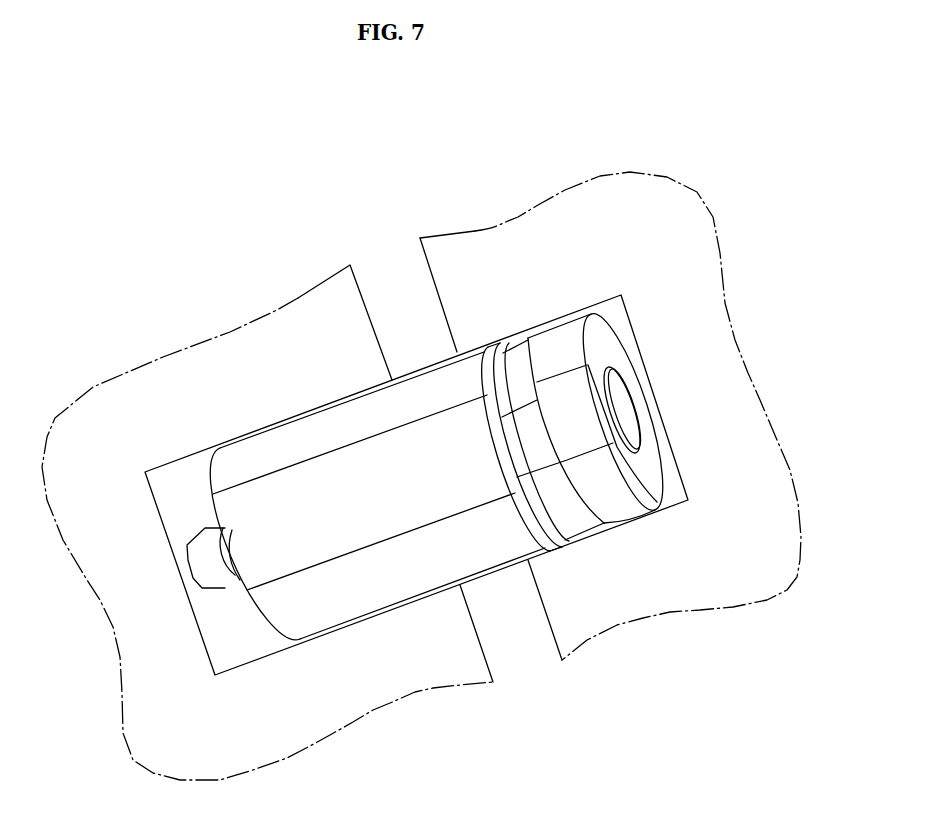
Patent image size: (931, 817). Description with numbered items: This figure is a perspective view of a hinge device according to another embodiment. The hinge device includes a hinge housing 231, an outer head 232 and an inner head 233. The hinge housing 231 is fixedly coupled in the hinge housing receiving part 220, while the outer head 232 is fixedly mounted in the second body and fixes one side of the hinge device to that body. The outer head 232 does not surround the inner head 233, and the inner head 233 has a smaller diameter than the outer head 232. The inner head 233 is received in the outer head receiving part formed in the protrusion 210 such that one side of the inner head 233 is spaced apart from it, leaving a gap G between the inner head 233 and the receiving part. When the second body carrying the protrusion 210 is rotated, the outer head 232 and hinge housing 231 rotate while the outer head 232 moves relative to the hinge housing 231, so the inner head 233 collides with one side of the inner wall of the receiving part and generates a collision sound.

The protrusion 210 is at (512, 186).
The hinge housing receiving part 220 is at (214, 295).
The hinge housing 231 is at (480, 552).
The outer head 232 is at (583, 415).
The inner head 233 is at (560, 525).
The gap G is at (512, 345).